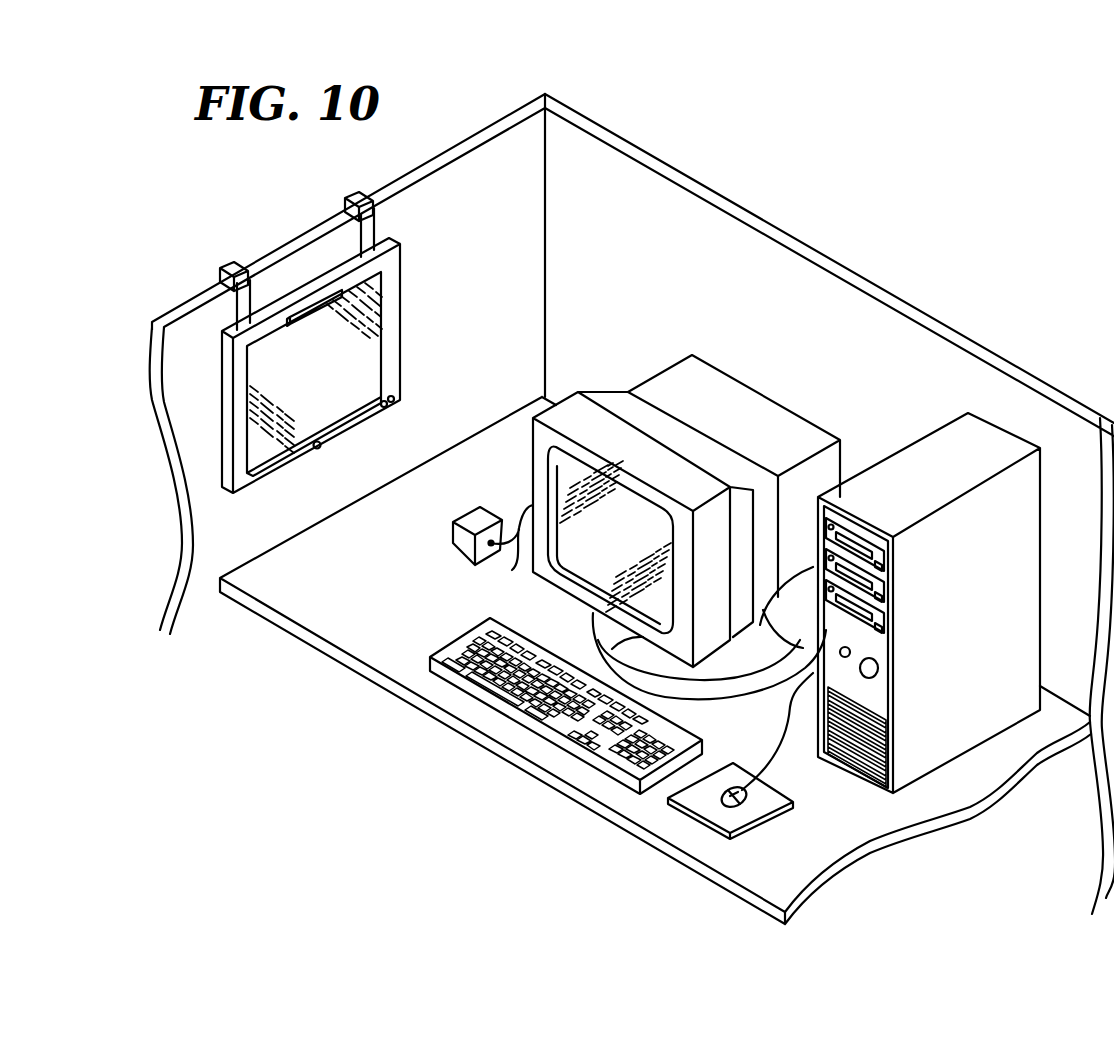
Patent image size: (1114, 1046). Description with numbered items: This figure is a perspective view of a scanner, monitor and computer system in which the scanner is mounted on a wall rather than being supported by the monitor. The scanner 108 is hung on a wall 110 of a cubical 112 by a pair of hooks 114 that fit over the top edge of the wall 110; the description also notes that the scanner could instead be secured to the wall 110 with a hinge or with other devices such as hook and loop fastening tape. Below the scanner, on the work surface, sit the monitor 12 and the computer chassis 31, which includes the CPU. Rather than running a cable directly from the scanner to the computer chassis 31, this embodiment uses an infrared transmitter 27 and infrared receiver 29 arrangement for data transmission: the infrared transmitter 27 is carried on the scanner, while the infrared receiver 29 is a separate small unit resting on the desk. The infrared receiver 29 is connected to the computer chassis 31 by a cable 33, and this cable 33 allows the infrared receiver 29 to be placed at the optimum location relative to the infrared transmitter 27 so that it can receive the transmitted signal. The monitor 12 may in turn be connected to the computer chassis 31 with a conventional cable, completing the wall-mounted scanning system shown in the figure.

The monitor 12 is at (806, 440).
The infrared transmitter 27 is at (318, 449).
The infrared receiver 29 is at (470, 545).
The computer chassis 31 is at (977, 440).
The cable 33 is at (512, 570).
The display frame 108 is at (406, 328).
The wall 110 is at (460, 172).
The cubical 112 is at (725, 188).
The hooks 114 is at (234, 268).